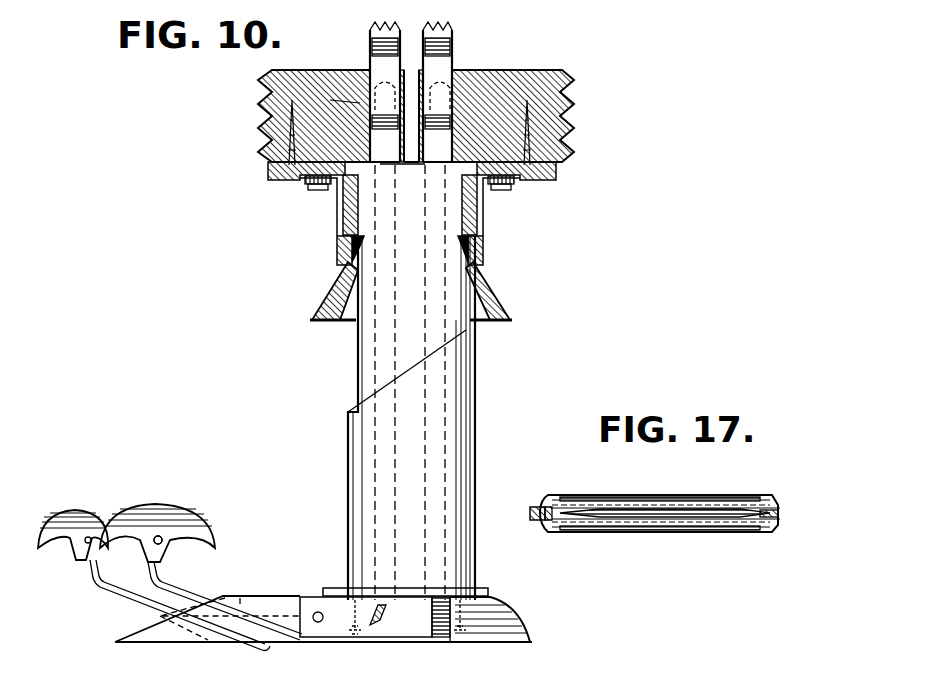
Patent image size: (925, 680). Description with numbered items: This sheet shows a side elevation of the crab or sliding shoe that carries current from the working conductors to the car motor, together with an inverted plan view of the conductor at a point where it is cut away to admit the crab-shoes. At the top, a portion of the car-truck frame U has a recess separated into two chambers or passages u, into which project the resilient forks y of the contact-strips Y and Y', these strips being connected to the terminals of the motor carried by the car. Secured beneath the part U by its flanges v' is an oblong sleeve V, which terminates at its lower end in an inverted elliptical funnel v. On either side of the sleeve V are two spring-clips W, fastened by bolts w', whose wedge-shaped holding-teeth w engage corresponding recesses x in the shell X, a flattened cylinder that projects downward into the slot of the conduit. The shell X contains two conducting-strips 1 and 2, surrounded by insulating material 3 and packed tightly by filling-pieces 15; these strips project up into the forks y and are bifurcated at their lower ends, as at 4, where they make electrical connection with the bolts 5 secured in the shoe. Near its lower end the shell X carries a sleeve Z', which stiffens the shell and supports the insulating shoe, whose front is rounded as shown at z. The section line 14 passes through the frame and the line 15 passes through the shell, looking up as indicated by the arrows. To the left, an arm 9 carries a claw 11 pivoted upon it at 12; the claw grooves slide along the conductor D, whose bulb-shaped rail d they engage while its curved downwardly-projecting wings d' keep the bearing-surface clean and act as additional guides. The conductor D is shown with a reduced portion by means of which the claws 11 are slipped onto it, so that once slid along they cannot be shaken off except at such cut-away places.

In FIG. 10, the car-truck frame portion U is at (512, 72).
In FIG. 10, the chambers or passages u is at (411, 104).
In FIG. 10, the contact-strip Y' is at (365, 92).
In FIG. 10, the contact-strip Y is at (448, 92).
In FIG. 10, the resilient forks y is at (383, 98).
In FIG. 10, the conducting-strip 2 is at (384, 151).
In FIG. 10, the conducting-strip 1 is at (437, 151).
In FIG. 10, the insulating material 3 is at (383, 166).
In FIG. 10, the section line 14 is at (260, 116).
In FIG. 10, the flanges v' is at (427, 176).
In FIG. 10, the bolts w' is at (405, 193).
In FIG. 10, the oblong sleeve V is at (478, 218).
In FIG. 10, the spring-clips W is at (337, 222).
In FIG. 10, the recesses x is at (357, 250).
In FIG. 10, the wedge-shaped holding-teeth w is at (410, 244).
In FIG. 10, the inverted elliptical funnel v is at (411, 291).
In FIG. 10, the filling-pieces 15 is at (270, 318).
In FIG. 10, the shell X is at (358, 356).
In FIG. 10, the sleeve Z' is at (377, 382).
In FIG. 10, the rounded front z is at (507, 598).
In FIG. 10, the bolts 5 is at (380, 618).
In FIG. 10, the claw 11 is at (78, 512).
In FIG. 10, the pivot 12 is at (162, 536).
In FIG. 10, the arm 9 is at (95, 588).
In FIG. 10, the bifurcated ends 4 is at (364, 674).
In FIG. 17, the conductor D is at (752, 496).
In FIG. 17, the curved downwardly-projecting flanges or wings d' is at (660, 515).
In FIG. 17, the bulb-shaped rail d is at (769, 535).